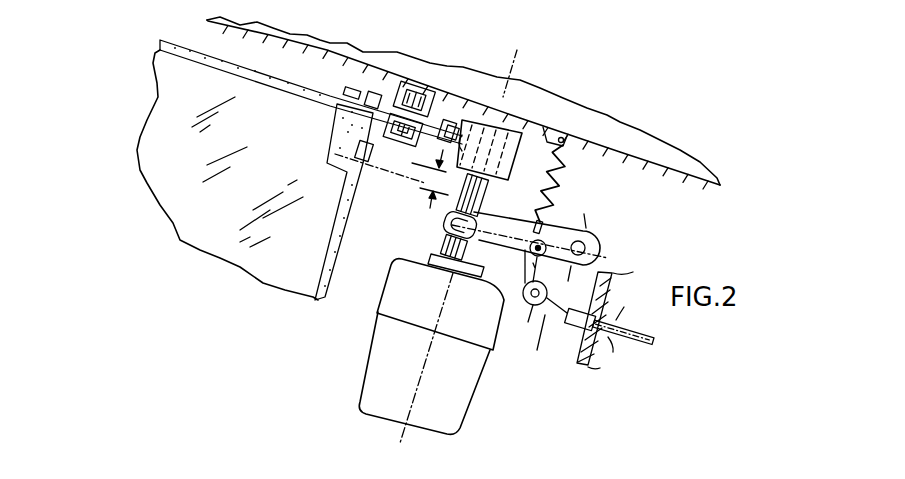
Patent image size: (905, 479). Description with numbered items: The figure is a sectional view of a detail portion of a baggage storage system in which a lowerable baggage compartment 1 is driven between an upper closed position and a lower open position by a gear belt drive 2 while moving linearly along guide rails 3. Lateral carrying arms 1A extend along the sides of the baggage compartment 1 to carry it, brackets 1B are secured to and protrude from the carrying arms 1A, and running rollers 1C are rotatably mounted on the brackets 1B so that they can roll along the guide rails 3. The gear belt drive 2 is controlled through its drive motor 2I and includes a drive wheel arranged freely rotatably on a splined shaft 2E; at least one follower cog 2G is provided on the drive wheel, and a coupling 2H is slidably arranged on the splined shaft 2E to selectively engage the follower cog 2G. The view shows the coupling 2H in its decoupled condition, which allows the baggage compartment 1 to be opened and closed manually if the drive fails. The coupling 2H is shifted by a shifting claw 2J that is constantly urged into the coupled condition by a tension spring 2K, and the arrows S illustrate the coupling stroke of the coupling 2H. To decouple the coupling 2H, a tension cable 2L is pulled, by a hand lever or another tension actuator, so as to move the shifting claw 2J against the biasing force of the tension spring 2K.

The baggage compartment 1 is at (208, 280).
The carrying arms 1A is at (338, 128).
The brackets 1B is at (390, 107).
The running rollers 1C is at (415, 92).
The guide rails 3 is at (447, 92).
The gear belt drive 2 is at (524, 124).
The tension spring 2K is at (567, 173).
The follower cog 2G is at (545, 194).
The shifting claw 2J is at (586, 230).
The coupling 2H is at (425, 227).
The arrows S is at (391, 187).
The splined shaft 2E is at (470, 272).
The drive motor 2I is at (390, 365).
The tension cable 2L is at (577, 362).